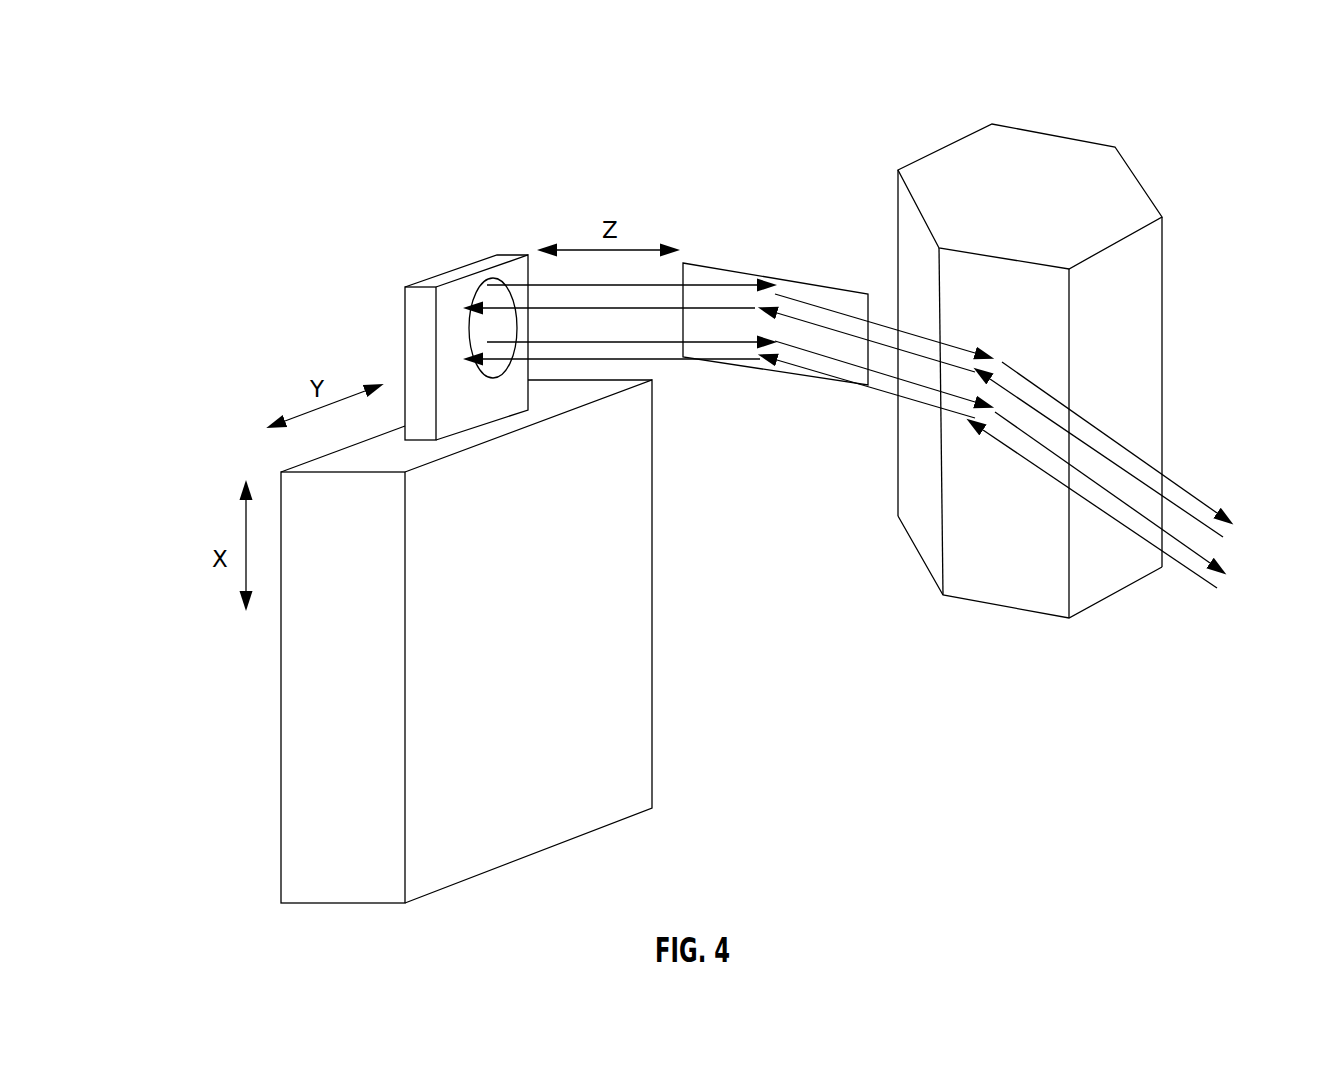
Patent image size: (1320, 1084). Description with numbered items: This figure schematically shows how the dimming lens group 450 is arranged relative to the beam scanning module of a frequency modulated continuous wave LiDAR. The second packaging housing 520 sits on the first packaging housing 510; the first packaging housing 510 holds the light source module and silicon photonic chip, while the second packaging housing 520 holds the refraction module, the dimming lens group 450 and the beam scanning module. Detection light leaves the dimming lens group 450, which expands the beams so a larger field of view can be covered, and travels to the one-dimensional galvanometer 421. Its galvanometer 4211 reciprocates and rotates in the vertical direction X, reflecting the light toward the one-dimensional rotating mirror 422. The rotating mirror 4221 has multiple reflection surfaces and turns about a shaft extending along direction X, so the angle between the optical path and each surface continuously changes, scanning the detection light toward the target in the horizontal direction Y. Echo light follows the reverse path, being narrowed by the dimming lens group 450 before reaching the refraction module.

The first packaging housing 510 is at (294, 680).
The second packaging housing 520 is at (423, 318).
The dimming lens group 450 is at (482, 297).
The one-dimensional galvanometer 421 is at (829, 300).
The galvanometer 4211 is at (702, 263).
The one-dimensional rotating mirror 422 is at (1060, 329).
The rotating mirror 4221 is at (1048, 153).